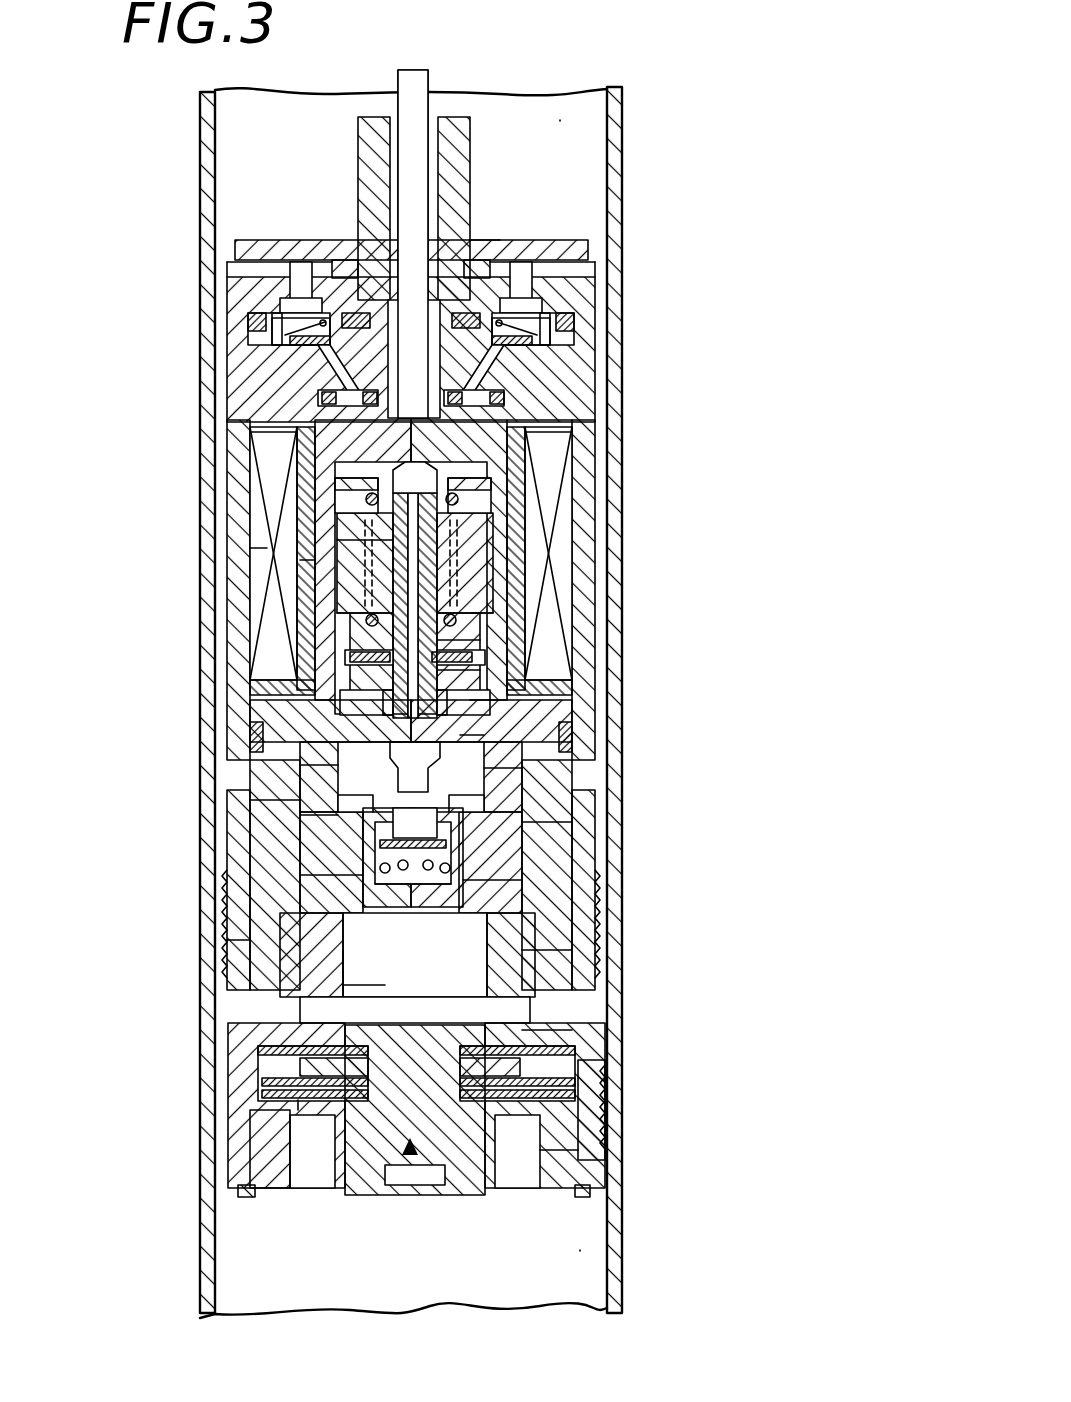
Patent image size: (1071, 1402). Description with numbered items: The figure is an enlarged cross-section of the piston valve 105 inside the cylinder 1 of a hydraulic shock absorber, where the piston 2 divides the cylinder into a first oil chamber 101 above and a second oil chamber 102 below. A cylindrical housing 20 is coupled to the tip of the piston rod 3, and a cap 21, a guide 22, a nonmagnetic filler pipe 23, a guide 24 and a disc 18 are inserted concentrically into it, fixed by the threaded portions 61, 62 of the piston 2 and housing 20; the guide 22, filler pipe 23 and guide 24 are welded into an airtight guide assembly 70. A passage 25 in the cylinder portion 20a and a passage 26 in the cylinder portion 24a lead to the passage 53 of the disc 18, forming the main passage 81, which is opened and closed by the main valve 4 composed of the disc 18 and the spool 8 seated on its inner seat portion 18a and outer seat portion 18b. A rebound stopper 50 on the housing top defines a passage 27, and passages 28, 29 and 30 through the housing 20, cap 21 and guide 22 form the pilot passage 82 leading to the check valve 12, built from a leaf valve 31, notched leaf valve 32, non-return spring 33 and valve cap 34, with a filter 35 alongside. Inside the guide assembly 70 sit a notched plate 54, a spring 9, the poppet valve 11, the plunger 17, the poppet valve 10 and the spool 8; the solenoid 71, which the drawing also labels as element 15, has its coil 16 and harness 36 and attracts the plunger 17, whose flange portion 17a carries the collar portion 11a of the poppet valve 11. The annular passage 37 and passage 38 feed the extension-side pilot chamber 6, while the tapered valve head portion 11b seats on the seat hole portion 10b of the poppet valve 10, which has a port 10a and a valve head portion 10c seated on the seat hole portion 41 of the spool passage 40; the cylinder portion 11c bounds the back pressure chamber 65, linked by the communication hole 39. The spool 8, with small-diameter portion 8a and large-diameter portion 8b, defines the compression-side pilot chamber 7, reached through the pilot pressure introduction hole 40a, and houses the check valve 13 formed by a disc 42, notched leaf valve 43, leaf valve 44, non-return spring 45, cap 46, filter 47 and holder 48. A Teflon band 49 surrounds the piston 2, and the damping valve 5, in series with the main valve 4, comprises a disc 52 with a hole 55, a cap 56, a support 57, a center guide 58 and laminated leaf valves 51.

The cylinder 1 is at (608, 120).
The piston 2 is at (298, 1100).
The piston rod 3 is at (455, 118).
The main valve 4 is at (498, 768).
The damping valve 5 is at (296, 1118).
The extension-side pilot chamber 6 is at (470, 735).
The compression-side pilot chamber 7 is at (310, 765).
The spool 8 is at (300, 800).
The small-diameter portion 8a is at (252, 737).
The large-diameter portion 8b is at (330, 815).
The spring 9 is at (470, 540).
The poppet valve 10 is at (340, 690).
The port 10a is at (440, 745).
The seat hole portion 10b is at (345, 725).
The valve head portion 10c is at (432, 780).
The poppet valve 11 is at (355, 640).
The collar portion 11a is at (470, 640).
The valve head portion 11b is at (360, 660).
The cylinder portion 11c is at (368, 580).
The check valve 12 is at (300, 300).
The check valve 13 is at (592, 960).
The coil 15 is at (300, 488).
The coil 16 is at (310, 412).
The plunger 17 is at (350, 520).
The flange portion 17a is at (480, 705).
The disc 18 is at (540, 1045).
The inner seat portion 18a is at (387, 985).
The outer seat portion 18b is at (330, 995).
The housing 20 is at (243, 335).
The cylinder portion 20a is at (540, 822).
The cap 21 is at (300, 360).
The guide 22 is at (520, 440).
The filler pipe 23 is at (285, 432).
The guide 24 is at (340, 610).
The cylinder portion 24a is at (467, 880).
The passage 25 is at (505, 880).
The passage 26 is at (528, 950).
The passage 27 is at (560, 250).
The passage 28 is at (565, 292).
The passage 29 is at (470, 400).
The passage 30 is at (480, 425).
The leaf valve 31 is at (283, 332).
The notched leaf valve 32 is at (500, 355).
The non-return spring 33 is at (540, 325).
The valve cap 34 is at (256, 318).
The filter 35 is at (295, 262).
The harness 36 is at (415, 78).
The annular passage 37 is at (455, 605).
The passage 38 is at (445, 670).
The communication hole 39 is at (432, 560).
The passage 40 is at (525, 840).
The pilot pressure introduction hole 40a is at (335, 780).
The seat hole portion 41 is at (460, 812).
The disc 42 is at (375, 845).
The notched leaf valve 43 is at (465, 905).
The leaf valve 44 is at (300, 875).
The non-return spring 45 is at (360, 905).
The cap 46 is at (500, 860).
The filter 47 is at (535, 1030).
The holder 48 is at (365, 950).
The Teflon band 49 is at (240, 1186).
The rebound stopper 50 is at (490, 238).
The leaf valves 51 is at (520, 1110).
The disc 52 is at (562, 1150).
The passage 53 is at (300, 1050).
The notched plate 54 is at (478, 500).
The hole 55 is at (320, 1175).
The cap 56 is at (555, 1075).
The support 57 is at (580, 1100).
The center guide 58 is at (415, 1160).
The threaded portion 61 is at (240, 895).
The threaded portion 62 is at (235, 935).
The back pressure chamber 65 is at (437, 480).
The guide assembly 70 is at (300, 562).
The solenoid 71 is at (267, 548).
The main passage 81 is at (330, 1082).
The pilot passage 82 is at (527, 272).
The first oil chamber 101 is at (550, 115).
The second oil chamber 102 is at (580, 1250).
The piston valve 105 is at (726, 722).